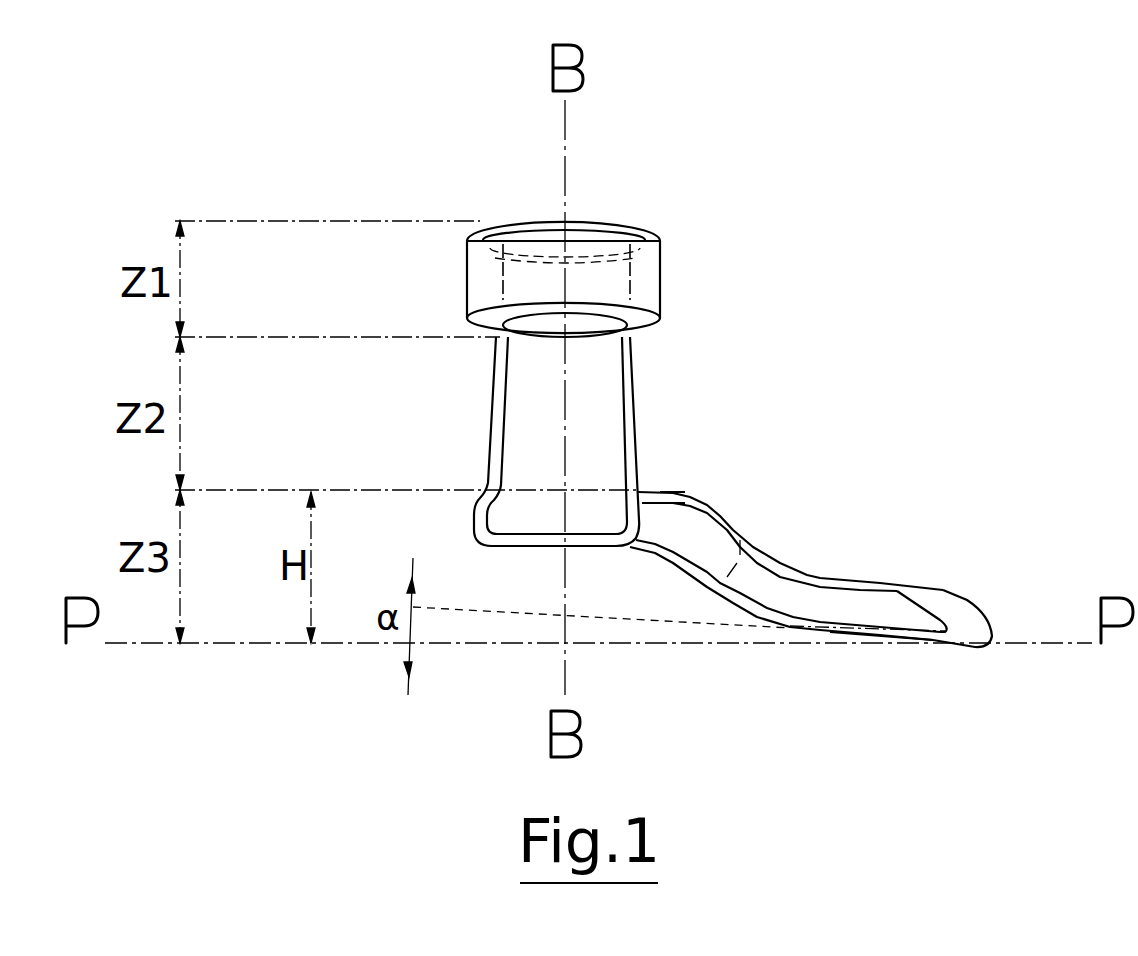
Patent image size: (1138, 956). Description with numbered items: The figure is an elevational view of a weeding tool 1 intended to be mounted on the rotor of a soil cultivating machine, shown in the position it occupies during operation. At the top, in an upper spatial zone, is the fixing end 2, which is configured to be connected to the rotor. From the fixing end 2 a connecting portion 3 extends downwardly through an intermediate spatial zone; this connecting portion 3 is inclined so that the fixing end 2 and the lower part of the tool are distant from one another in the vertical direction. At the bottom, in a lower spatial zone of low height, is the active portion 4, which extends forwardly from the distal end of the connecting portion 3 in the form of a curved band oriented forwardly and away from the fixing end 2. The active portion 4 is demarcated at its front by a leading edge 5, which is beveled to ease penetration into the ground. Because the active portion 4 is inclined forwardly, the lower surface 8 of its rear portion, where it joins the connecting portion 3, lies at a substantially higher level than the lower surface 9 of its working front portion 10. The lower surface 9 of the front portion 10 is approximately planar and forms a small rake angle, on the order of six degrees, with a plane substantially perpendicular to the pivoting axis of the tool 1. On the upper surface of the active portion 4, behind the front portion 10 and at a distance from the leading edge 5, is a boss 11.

The weeding tool 1 is at (700, 215).
The fixing end 2 is at (665, 275).
The connecting portion 3 is at (596, 411).
The active portion 4 is at (833, 560).
The leading edge 5 is at (975, 628).
The lower surface of rear portion 8 is at (510, 550).
The lower surface of front portion 9 is at (863, 637).
The working front portion 10 is at (877, 603).
The boss 11 is at (707, 503).